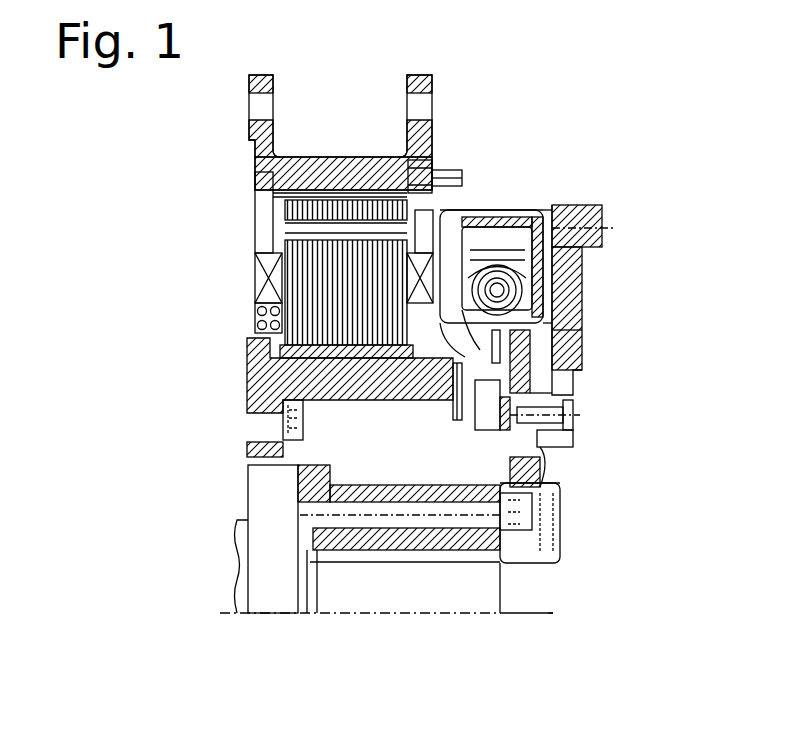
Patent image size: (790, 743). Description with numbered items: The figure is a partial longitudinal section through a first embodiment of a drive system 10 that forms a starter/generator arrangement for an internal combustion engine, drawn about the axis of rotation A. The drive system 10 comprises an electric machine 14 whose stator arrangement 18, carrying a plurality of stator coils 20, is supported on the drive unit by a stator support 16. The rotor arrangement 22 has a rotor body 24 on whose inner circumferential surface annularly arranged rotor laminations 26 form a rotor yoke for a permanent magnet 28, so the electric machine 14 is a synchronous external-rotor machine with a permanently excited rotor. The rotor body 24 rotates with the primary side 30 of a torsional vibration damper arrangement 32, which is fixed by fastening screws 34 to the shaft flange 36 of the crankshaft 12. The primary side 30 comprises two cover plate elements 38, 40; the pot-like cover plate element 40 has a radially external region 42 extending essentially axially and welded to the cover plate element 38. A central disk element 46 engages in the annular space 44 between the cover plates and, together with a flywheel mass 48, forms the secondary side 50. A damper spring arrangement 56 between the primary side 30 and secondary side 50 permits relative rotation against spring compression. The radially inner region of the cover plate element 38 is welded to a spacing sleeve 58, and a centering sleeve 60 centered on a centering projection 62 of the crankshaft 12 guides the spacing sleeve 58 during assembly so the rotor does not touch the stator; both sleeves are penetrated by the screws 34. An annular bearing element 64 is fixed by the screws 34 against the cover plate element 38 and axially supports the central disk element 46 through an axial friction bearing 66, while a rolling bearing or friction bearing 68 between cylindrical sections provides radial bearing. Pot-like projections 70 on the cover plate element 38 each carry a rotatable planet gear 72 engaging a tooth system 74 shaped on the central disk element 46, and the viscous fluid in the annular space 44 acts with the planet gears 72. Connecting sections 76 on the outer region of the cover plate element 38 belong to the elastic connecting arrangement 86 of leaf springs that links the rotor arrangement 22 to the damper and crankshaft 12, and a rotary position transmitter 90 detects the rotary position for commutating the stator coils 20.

The drive system 10 is at (617, 117).
The crankshaft 12 is at (242, 587).
The electric machine 14 is at (496, 157).
The stator support 16 is at (270, 378).
The stator arrangement 18 is at (243, 281).
The stator coils 20 is at (313, 300).
The rotor arrangement 22 is at (243, 208).
The rotor body 24 is at (360, 190).
The rotor laminations 26 is at (302, 203).
The permanent magnet 28 is at (293, 225).
The primary side 30 is at (561, 192).
The torsional vibration damper arrangement 32 is at (639, 218).
The fastening screws 34 is at (328, 520).
The shaft flange 36 is at (267, 587).
The cover plate element 38 is at (297, 380).
The cover plate element 40 is at (585, 327).
The radially external region 42 is at (516, 246).
The annular space 44 is at (587, 207).
The central disk element 46 is at (538, 463).
The flywheel mass 48 is at (587, 278).
The secondary side 50 is at (565, 479).
The damper spring arrangement 56 is at (512, 213).
The spacing sleeve 58 is at (395, 560).
The centering sleeve 60 is at (310, 480).
The centering projection 62 is at (307, 565).
The annular bearing element 64 is at (553, 500).
The axial friction bearing 66 is at (535, 466).
The rolling bearing or friction bearing 68 is at (510, 557).
The pot-like projections 70 is at (562, 378).
The planet gear 72 is at (577, 367).
The tooth system 74 is at (585, 300).
The connecting sections 76 is at (447, 187).
The elastic connecting arrangement 86 is at (436, 158).
The rotary position transmitter 90 is at (444, 408).
The axis of rotation A is at (543, 617).